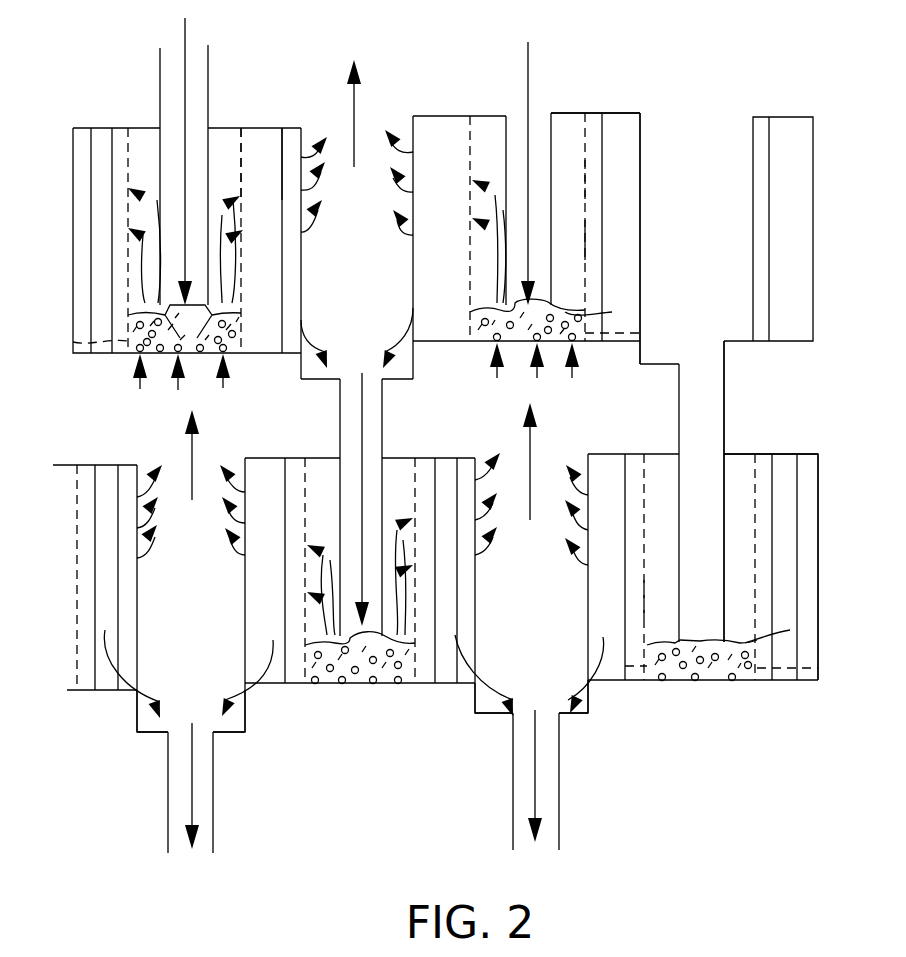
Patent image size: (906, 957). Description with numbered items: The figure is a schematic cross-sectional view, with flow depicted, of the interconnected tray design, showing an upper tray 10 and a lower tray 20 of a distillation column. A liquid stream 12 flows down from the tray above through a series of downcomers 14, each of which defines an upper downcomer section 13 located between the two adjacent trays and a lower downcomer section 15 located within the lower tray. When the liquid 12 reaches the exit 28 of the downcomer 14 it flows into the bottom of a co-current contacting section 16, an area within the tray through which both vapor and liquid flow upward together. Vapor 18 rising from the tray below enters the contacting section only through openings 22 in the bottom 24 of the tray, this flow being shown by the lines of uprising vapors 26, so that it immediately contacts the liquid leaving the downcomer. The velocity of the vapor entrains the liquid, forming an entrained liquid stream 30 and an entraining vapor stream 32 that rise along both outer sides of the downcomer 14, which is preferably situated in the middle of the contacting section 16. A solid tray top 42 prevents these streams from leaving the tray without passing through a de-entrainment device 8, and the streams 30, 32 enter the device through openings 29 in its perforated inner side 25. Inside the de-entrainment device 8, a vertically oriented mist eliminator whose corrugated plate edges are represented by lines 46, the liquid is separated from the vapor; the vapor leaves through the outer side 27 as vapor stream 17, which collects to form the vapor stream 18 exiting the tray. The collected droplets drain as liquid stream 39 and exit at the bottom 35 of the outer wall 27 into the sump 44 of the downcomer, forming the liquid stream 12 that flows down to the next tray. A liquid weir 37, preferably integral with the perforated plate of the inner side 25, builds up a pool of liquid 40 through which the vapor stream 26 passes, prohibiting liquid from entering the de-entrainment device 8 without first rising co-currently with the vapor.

The de-entrainment device 8 is at (88, 158).
The upper tray 10 is at (663, 88).
The liquid stream 12 is at (185, 35).
The upper downcomer section 13 is at (691, 422).
The downcomer 14 is at (160, 77).
The lower downcomer section 15 is at (691, 557).
The co-current contacting section 16 is at (152, 172).
The vapor stream 17 is at (322, 182).
The vapor 18 is at (354, 112).
The lower tray 20 is at (750, 781).
The openings 22 is at (160, 352).
The bottom 24 is at (100, 357).
The inner side 25 is at (241, 140).
The uprising vapors 26 is at (142, 389).
The outer side 27 is at (641, 173).
The exit 28 is at (442, 486).
The openings 29 is at (244, 166).
The entrained liquid stream 30 is at (130, 213).
The entraining vapor stream 32 is at (130, 266).
The bottom of the outer wall 35 is at (303, 338).
The liquid weir 37 is at (73, 341).
The liquid stream 39 is at (383, 351).
The pool of liquid 40 is at (823, 620).
The tray top 42 is at (136, 126).
The sump 44 is at (137, 718).
The lines 46 is at (460, 134).